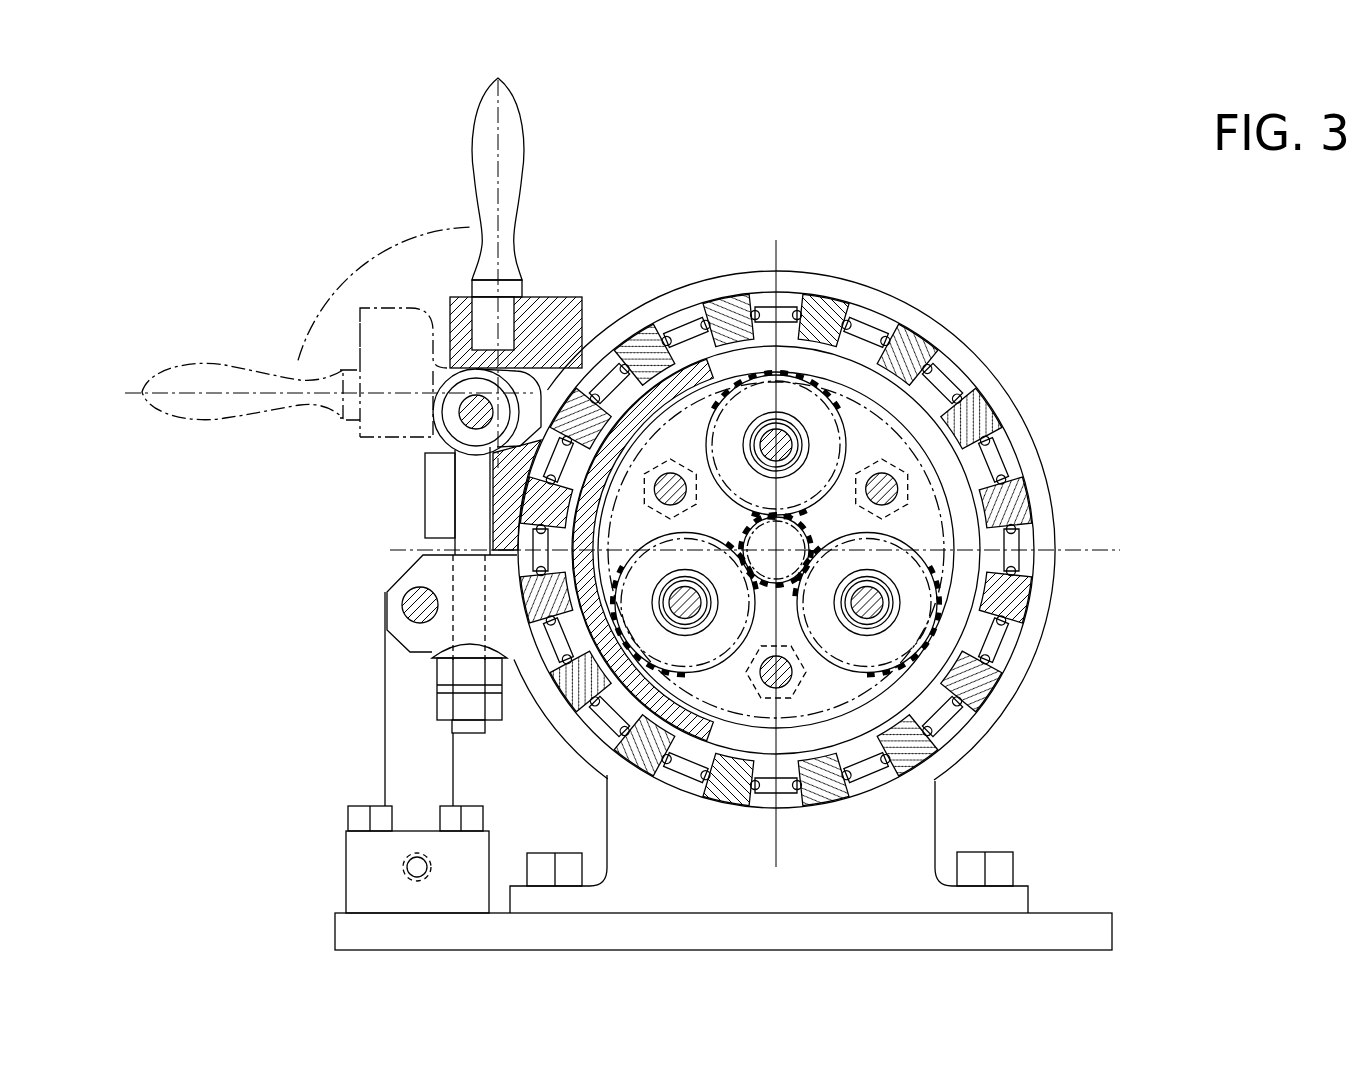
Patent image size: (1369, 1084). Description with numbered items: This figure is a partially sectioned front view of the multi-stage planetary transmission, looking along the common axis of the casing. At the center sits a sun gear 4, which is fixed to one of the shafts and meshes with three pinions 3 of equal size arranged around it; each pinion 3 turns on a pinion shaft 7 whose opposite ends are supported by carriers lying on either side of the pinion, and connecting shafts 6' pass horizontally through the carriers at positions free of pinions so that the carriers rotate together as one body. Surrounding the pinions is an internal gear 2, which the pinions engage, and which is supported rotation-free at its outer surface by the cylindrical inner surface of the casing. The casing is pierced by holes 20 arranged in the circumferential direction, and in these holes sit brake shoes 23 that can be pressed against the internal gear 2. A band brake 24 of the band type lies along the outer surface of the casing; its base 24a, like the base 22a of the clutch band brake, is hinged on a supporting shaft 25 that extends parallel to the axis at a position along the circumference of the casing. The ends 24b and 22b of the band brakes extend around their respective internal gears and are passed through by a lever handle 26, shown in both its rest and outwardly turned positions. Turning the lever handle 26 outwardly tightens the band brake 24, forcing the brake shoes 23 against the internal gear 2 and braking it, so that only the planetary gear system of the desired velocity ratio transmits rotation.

The internal gear 2 is at (833, 387).
The pinion 3 is at (822, 425).
The sun gear 4 is at (793, 538).
The connecting shaft 6' is at (843, 569).
The pinion shaft 7 is at (762, 430).
The hole 20 is at (1005, 630).
The base of band brake 22a is at (371, 635).
The end of band brake 22b is at (410, 370).
The brake shoe 23 is at (867, 780).
The band brake 24 is at (787, 822).
The base of band brake 24a is at (420, 572).
The end of band brake 24b is at (430, 487).
The supporting shaft 25 is at (403, 608).
The lever handle 26 is at (472, 143).